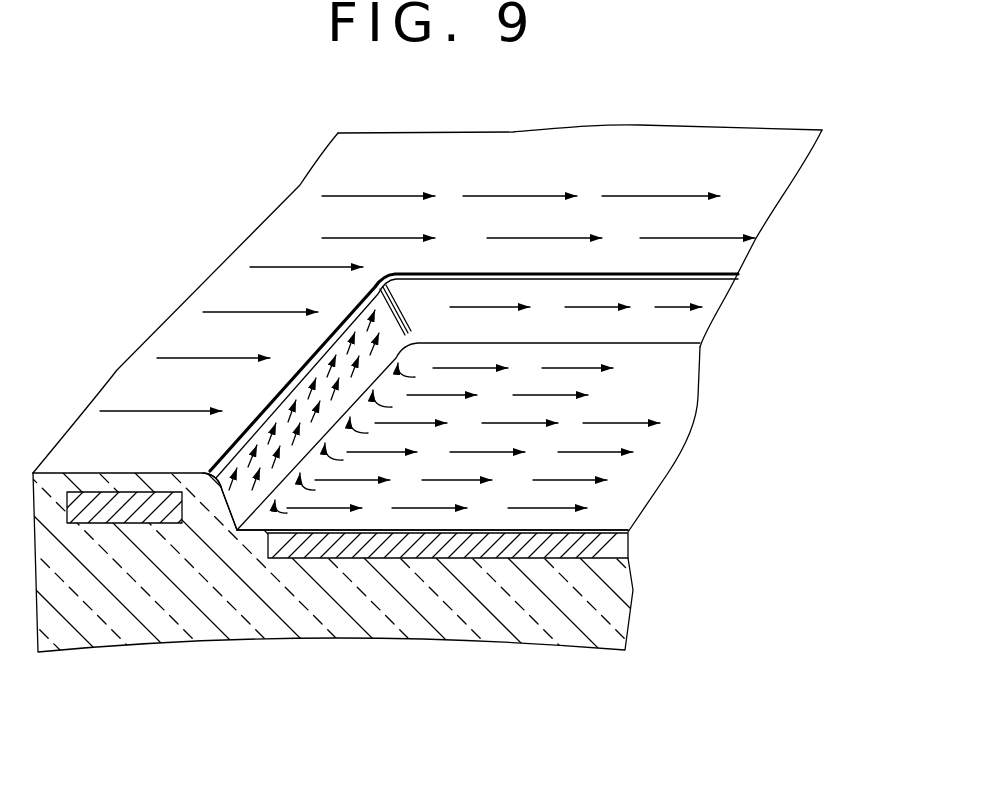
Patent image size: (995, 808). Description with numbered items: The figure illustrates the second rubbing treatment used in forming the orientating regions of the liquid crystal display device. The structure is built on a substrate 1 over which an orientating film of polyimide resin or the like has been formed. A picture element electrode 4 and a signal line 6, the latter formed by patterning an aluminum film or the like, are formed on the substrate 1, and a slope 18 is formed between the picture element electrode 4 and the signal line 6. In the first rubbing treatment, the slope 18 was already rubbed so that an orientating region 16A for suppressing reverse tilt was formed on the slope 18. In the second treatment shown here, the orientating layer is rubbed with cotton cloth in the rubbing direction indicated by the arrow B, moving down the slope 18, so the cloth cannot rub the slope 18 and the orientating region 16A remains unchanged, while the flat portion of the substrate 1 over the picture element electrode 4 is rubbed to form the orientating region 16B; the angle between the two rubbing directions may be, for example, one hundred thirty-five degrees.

The substrate 1 is at (593, 617).
The picture element electrode 4 is at (635, 546).
The signal line 6 is at (110, 498).
The slope 18 is at (226, 500).
The orientating region 16A is at (255, 492).
The orientating region 16B is at (635, 478).
The rubbing direction arrow B is at (494, 407).